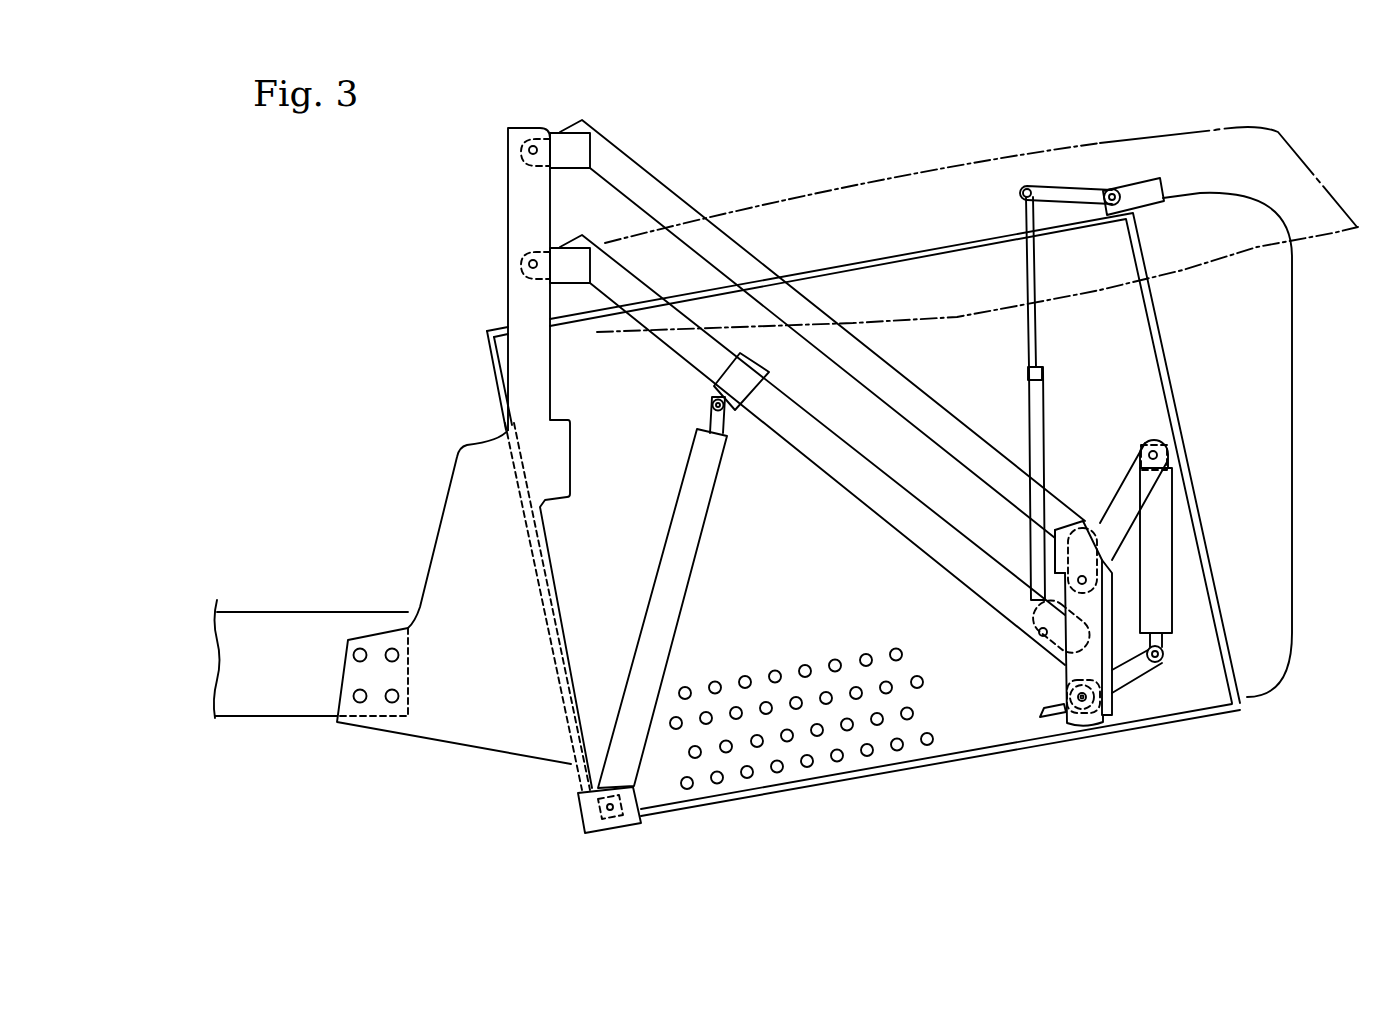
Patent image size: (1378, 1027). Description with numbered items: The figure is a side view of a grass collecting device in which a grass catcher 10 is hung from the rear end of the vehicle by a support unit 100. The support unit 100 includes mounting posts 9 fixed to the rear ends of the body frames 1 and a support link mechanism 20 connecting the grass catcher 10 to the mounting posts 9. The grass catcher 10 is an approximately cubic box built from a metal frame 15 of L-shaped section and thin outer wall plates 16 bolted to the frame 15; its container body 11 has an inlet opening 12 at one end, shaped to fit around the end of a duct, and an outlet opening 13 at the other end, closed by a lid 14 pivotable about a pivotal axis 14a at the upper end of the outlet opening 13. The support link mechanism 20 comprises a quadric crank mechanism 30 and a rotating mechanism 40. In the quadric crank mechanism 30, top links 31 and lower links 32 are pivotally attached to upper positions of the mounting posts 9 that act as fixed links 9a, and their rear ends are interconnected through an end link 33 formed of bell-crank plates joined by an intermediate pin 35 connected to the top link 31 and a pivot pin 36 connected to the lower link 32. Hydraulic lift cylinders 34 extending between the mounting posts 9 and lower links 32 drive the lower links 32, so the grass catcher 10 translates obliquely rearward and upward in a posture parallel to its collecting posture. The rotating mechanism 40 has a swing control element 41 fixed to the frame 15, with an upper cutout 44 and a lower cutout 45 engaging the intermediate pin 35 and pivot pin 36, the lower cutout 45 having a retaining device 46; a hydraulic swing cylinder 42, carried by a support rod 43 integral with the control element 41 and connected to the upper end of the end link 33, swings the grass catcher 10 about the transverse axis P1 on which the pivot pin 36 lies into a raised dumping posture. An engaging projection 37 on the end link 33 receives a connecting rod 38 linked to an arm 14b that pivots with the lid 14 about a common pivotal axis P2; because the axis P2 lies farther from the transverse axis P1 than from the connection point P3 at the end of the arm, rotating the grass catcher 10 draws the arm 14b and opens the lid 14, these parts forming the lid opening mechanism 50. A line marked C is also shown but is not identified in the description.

The body frames 1 is at (292, 627).
The mounting posts 9 is at (463, 513).
The fixed links 9a is at (513, 212).
The grass catcher 10 is at (735, 813).
The container body 11 is at (805, 792).
The inlet opening 12 is at (533, 603).
The outlet opening 13 is at (1185, 385).
The lid 14 is at (1272, 392).
The pivotal axis 14a is at (1156, 170).
The arm 14b is at (1068, 190).
The frame 15 is at (847, 777).
The outer wall plates 16 is at (845, 705).
The support link mechanism 20 is at (921, 505).
The quadric crank mechanism 30 is at (897, 537).
The top links 31 is at (907, 400).
The lower links 32 is at (857, 492).
The end link 33 is at (1092, 615).
The hydraulic lift cylinders 34 is at (682, 583).
The intermediate pin 35 is at (1082, 576).
The pivot pin 36 is at (1147, 748).
The engaging projection 37 is at (1040, 637).
The connecting rod 38 is at (1037, 347).
The rotating mechanism 40 is at (1080, 752).
The swing control element 41 is at (1112, 635).
The hydraulic swing cylinder 42 is at (1160, 533).
The support rod 43 is at (1160, 648).
The upper cutout 44 is at (1058, 577).
The lower cutout 45 is at (1068, 697).
The retaining device 46 is at (1045, 723).
The lid opening mechanism 50 is at (1000, 178).
The support unit 100 is at (615, 128).
The center line C is at (743, 185).
The transverse axis P1 is at (1130, 713).
The pivotal axis P2 is at (1160, 203).
The connection point P3 is at (1020, 193).